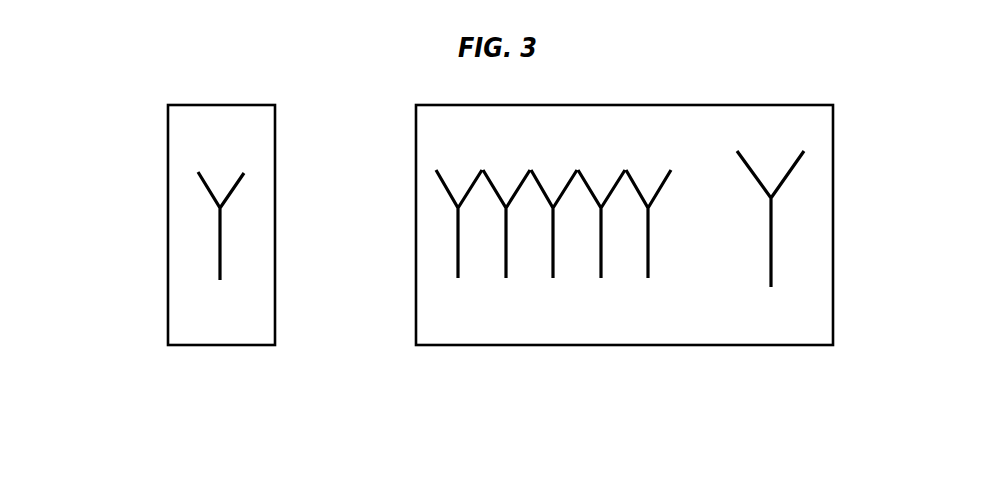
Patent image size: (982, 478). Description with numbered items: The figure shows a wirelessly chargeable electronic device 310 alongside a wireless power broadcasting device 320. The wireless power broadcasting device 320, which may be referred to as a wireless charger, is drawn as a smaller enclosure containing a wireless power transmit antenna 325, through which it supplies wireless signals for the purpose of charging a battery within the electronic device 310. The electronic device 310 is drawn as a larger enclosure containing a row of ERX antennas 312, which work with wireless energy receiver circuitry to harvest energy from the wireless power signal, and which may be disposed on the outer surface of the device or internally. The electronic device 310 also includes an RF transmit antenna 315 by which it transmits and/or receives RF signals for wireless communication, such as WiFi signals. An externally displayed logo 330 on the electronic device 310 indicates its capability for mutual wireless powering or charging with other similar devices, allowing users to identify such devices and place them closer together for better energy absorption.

The wirelessly chargeable electronic device 310 is at (730, 302).
The ERX antenna 312 is at (459, 257).
The RF transmit antenna 315 is at (772, 253).
The wireless power broadcasting device 320 is at (244, 305).
The wireless power transmit antenna 325 is at (218, 263).
The logo 330 is at (670, 330).